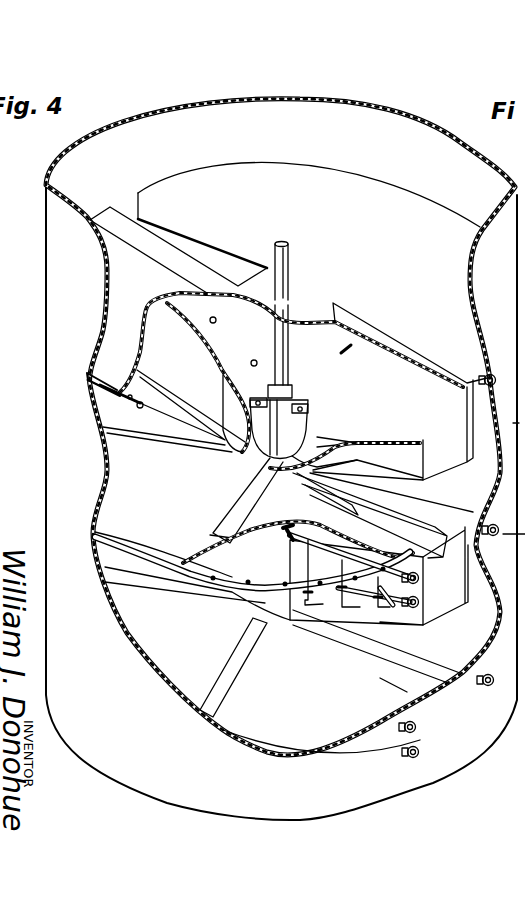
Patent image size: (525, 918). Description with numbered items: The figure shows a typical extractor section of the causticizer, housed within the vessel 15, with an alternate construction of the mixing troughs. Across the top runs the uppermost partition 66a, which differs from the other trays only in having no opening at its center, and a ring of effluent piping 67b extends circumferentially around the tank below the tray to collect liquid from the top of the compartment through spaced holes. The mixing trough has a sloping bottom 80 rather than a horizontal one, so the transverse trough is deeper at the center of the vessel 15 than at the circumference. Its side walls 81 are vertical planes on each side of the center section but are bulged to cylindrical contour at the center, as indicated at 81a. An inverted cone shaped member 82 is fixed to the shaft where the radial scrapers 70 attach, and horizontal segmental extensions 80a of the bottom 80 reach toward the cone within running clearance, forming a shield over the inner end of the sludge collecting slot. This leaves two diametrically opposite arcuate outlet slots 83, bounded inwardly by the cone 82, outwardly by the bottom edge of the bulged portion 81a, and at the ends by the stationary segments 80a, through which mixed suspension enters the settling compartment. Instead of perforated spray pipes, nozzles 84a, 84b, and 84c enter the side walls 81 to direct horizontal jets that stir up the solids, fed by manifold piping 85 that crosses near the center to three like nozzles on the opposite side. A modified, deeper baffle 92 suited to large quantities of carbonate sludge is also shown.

The vessel 15 is at (45, 394).
The uppermost partition 66a is at (275, 168).
The effluent piping 67b is at (397, 557).
The radial scrapers 70 is at (248, 492).
The sloping bottom 80 is at (438, 455).
The horizontal segmental extensions 80a is at (322, 437).
The side walls 81 is at (464, 425).
The bulged cylindrical portion 81a is at (237, 440).
The inverted cone shaped member 82 is at (290, 428).
The arcuate outlet slots 83 is at (305, 440).
The nozzle 84a is at (253, 360).
The nozzle 84b is at (212, 317).
The nozzle 84c is at (390, 610).
The manifold piping 85 is at (400, 608).
The modified baffle 92 is at (435, 538).